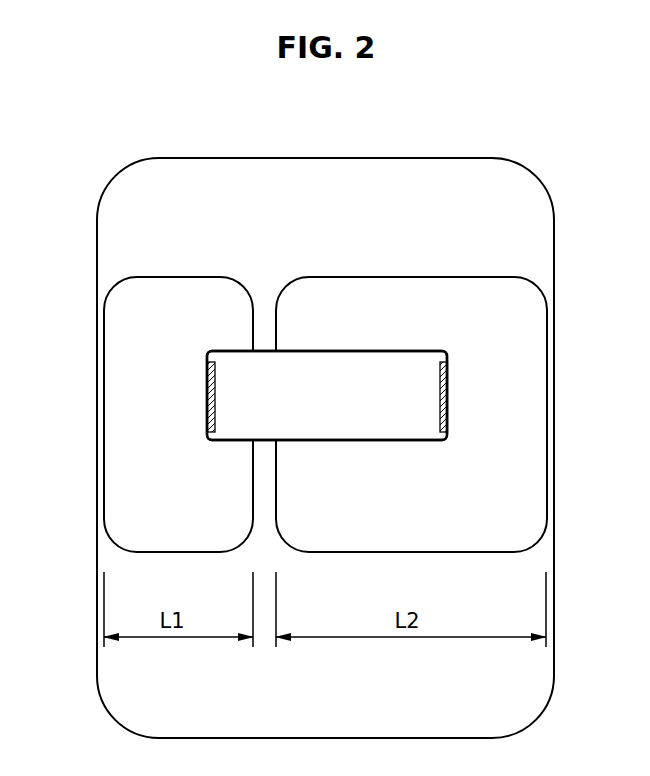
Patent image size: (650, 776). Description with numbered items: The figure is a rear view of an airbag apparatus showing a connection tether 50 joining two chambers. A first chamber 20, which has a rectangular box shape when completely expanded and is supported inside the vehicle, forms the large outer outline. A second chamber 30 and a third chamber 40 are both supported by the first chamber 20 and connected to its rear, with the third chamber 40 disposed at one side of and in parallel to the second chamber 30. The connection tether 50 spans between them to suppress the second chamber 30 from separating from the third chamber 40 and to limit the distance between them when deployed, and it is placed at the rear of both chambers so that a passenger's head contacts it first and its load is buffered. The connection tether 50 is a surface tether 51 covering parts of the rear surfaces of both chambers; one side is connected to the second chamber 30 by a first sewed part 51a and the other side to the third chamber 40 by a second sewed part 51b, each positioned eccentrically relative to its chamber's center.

The first chamber 20 is at (545, 188).
The second chamber 30 is at (140, 485).
The third chamber 40 is at (508, 473).
The connection tether 50 is at (367, 350).
The surface tether 51 is at (399, 367).
The first sewed part 51a is at (207, 393).
The second sewed part 51b is at (448, 393).